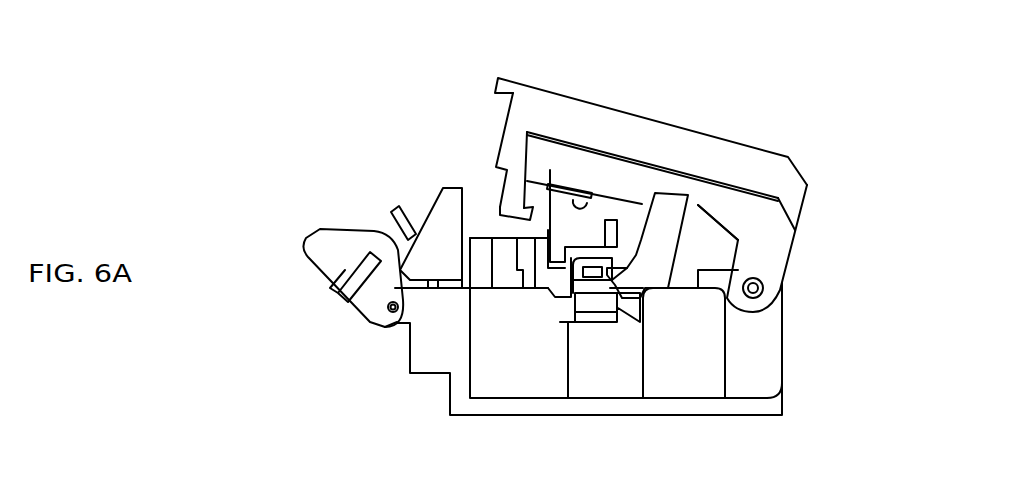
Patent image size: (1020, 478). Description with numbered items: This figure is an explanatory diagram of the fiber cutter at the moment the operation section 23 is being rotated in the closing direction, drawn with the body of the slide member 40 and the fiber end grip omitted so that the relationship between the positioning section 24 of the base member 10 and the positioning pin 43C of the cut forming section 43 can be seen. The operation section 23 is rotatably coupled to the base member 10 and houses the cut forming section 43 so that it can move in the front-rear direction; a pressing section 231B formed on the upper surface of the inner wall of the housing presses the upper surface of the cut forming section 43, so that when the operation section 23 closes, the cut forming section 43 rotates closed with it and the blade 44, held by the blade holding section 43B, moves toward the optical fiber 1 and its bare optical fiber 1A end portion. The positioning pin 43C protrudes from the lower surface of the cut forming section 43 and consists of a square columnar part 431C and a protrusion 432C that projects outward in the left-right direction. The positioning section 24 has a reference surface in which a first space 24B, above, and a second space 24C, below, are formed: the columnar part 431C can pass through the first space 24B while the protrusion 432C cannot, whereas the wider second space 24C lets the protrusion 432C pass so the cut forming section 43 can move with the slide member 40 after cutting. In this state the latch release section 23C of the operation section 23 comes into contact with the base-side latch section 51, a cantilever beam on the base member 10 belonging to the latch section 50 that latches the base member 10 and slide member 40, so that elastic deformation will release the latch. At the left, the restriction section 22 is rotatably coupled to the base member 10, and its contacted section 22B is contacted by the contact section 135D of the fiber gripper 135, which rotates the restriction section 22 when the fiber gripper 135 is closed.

The bare optical fiber 1A is at (470, 238).
The optical fiber 1 is at (491, 356).
The base member 10 is at (765, 352).
The contacted section 22B is at (392, 235).
The restriction section 22 is at (365, 257).
The operation section 23 is at (662, 135).
The pressing section 231B is at (552, 135).
The latch release section 23C is at (673, 243).
The positioning section 24 is at (412, 372).
The first space 24B is at (493, 258).
The second space 24C is at (503, 280).
The cut forming section 43 is at (768, 245).
The slide member 40 is at (810, 248).
The blade holding section 43B is at (598, 215).
The positioning pin 43C is at (414, 156).
The columnar part 431C is at (520, 187).
The protrusion 432C is at (497, 208).
The blade 44 is at (608, 220).
The base-side latch section 51 is at (640, 322).
The latch section 50 is at (680, 383).
The contact section 135D is at (372, 322).
The fiber gripper 135 is at (295, 353).